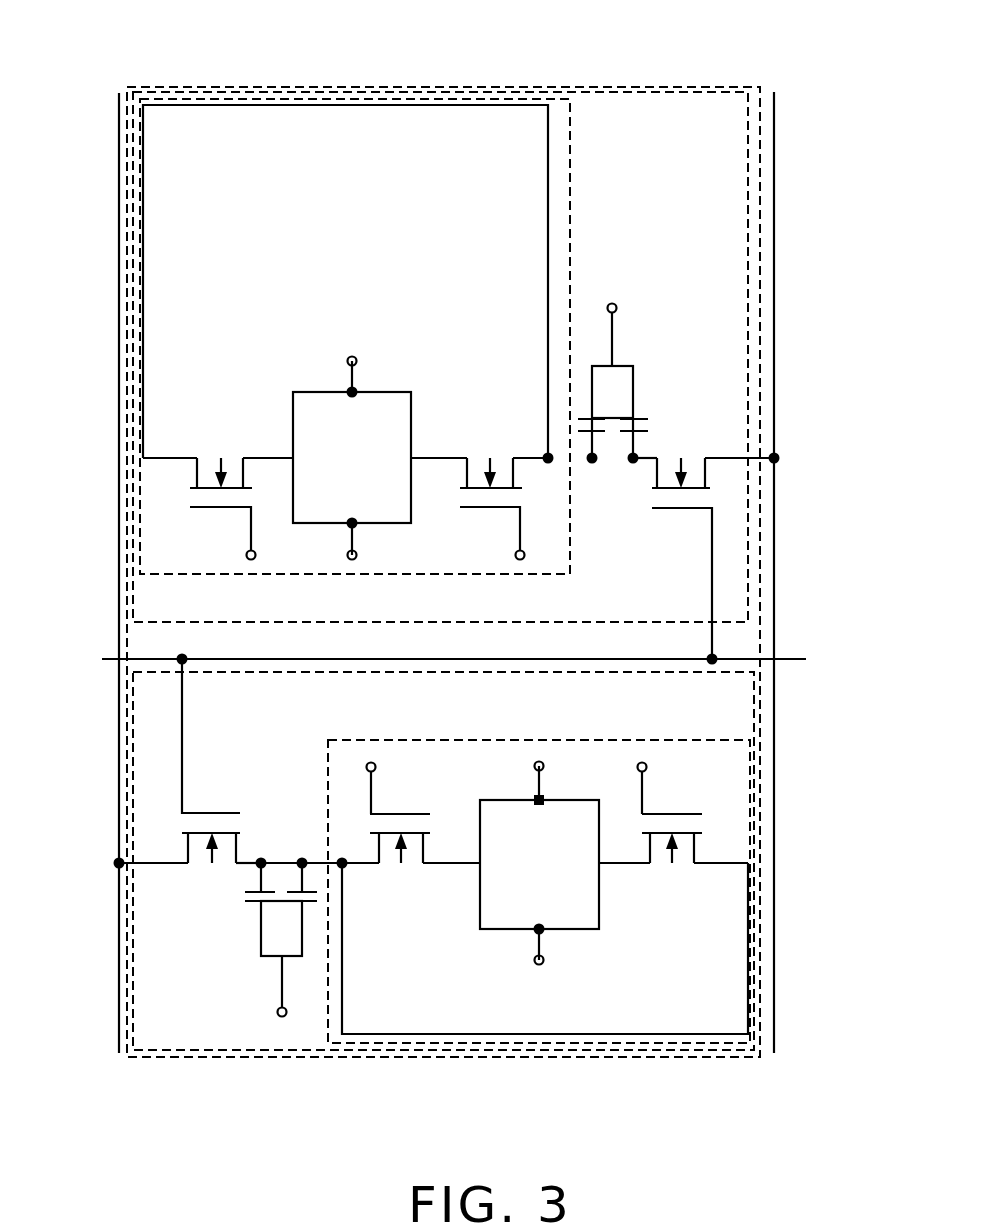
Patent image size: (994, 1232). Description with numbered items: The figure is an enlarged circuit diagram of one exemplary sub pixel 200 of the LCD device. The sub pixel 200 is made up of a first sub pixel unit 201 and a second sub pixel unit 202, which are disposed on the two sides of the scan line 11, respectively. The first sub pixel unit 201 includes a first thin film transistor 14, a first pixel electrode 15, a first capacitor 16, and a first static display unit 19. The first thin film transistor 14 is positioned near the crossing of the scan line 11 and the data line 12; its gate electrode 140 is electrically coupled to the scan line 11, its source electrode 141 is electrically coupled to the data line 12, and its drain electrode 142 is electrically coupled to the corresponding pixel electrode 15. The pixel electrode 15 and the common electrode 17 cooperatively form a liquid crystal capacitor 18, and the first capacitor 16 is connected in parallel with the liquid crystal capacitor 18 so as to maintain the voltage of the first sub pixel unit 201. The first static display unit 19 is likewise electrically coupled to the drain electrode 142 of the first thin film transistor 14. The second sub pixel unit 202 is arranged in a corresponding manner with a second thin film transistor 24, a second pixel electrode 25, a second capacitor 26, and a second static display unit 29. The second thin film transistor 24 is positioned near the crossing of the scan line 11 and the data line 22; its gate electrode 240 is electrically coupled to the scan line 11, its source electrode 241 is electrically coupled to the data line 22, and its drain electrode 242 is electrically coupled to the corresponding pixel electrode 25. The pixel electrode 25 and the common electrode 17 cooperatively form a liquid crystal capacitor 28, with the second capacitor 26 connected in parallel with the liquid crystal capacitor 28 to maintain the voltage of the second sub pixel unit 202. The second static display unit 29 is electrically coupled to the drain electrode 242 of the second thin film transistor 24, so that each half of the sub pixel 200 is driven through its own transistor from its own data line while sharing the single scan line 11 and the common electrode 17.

The scan line 11 is at (148, 659).
The data line 12 is at (119, 618).
The data line 22 is at (776, 625).
The first thin film transistor 14 is at (187, 825).
The gate electrode 140 is at (182, 737).
The source electrode 141 is at (181, 866).
The drain electrode 142 is at (247, 858).
The first pixel electrode 15 is at (260, 893).
The first capacitor 16 is at (287, 900).
The common electrode 17 is at (613, 305).
The liquid crystal capacitor 18 is at (245, 897).
The first static display unit 19 is at (327, 992).
The second thin film transistor 24 is at (672, 456).
The gate electrode 240 is at (707, 523).
The source electrode 241 is at (730, 457).
The drain electrode 242 is at (641, 462).
The second pixel electrode 25 is at (643, 438).
The second capacitor 26 is at (605, 428).
The liquid crystal capacitor 28 is at (652, 424).
The second static display unit 29 is at (571, 149).
The sub pixel 200 is at (342, 86).
The first sub pixel unit 201 is at (131, 995).
The second sub pixel unit 202 is at (278, 88).